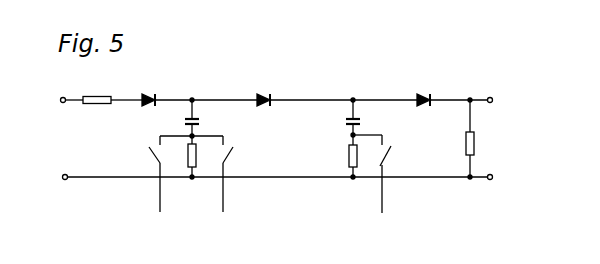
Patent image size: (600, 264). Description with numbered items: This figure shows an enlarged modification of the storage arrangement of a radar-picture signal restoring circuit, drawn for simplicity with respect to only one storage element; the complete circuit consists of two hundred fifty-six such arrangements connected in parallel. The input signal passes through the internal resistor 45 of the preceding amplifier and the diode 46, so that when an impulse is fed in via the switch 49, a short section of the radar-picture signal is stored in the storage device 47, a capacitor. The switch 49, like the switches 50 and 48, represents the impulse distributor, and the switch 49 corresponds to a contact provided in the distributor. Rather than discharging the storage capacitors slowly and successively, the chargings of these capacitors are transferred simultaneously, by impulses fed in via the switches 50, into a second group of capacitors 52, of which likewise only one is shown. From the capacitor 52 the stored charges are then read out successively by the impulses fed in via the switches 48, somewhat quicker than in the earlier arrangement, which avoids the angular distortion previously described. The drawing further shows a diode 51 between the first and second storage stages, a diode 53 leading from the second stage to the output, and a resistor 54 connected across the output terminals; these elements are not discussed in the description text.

The internal resistor 45 is at (97, 92).
The diode 46 is at (150, 92).
The storage device 47 is at (203, 118).
The switch 48 is at (395, 174).
The switch 49 is at (144, 174).
The switch 50 is at (239, 174).
The diode 51 is at (263, 92).
The second group of capacitors 52 is at (365, 117).
The diode 53 is at (421, 92).
The resistor 54 is at (481, 138).